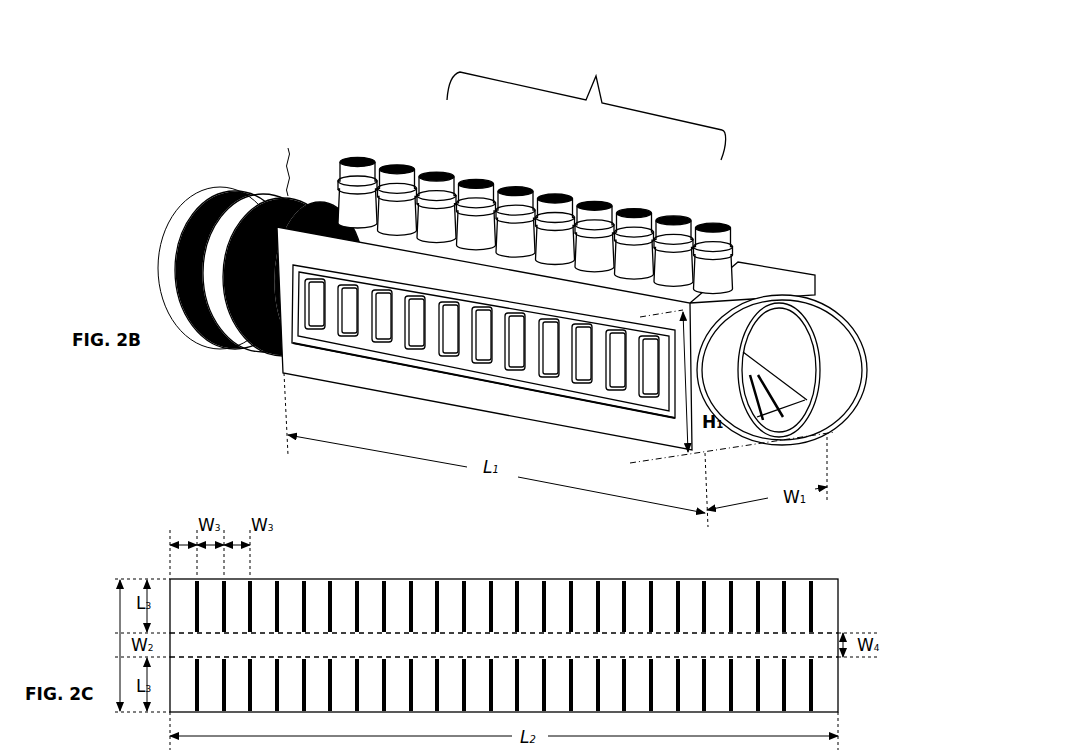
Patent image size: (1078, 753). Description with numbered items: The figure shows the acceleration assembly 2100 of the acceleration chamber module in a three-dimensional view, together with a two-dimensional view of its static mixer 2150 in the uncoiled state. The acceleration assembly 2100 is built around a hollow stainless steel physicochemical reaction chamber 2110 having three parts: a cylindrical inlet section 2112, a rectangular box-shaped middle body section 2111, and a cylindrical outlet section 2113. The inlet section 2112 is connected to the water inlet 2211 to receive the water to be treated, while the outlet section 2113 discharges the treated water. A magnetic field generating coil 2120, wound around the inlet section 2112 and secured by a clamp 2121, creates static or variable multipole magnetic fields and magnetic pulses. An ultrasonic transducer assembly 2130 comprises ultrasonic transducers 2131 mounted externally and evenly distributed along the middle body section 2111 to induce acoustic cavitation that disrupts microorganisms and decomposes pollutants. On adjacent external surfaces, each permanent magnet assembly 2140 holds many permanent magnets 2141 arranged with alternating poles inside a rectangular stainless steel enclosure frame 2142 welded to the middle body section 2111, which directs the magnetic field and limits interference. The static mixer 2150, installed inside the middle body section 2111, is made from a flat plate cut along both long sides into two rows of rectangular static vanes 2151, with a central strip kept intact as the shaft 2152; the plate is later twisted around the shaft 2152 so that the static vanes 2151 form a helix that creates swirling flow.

In FIG. 2B, the acceleration assembly 2100 is at (658, 76).
In FIG. 2C, the acceleration assembly 2100 is at (168, 509).
In FIG. 2B, the physicochemical reaction chamber 2110 is at (557, 296).
In FIG. 2B, the middle body section 2111 is at (772, 267).
In FIG. 2B, the inlet section 2112 is at (172, 232).
In FIG. 2B, the outlet section 2113 is at (816, 380).
In FIG. 2B, the magnetic field generating coil 2120 is at (238, 192).
In FIG. 2B, the clamp 2121 is at (178, 318).
In FIG. 2B, the ultrasonic transducer assembly 2130 is at (535, 172).
In FIG. 2B, the ultrasonic transducer 2131 is at (433, 180).
In FIG. 2B, the permanent magnet assembly 2140 is at (579, 356).
In FIG. 2B, the permanent magnet 2141 is at (453, 362).
In FIG. 2B, the enclosure frame 2142 is at (488, 372).
In FIG. 2B, the static mixer 2150 is at (876, 436).
In FIG. 2C, the static vane 2151 is at (367, 577).
In FIG. 2C, the shaft 2152 is at (807, 643).
In FIG. 2B, the water inlet 2211 is at (134, 0).